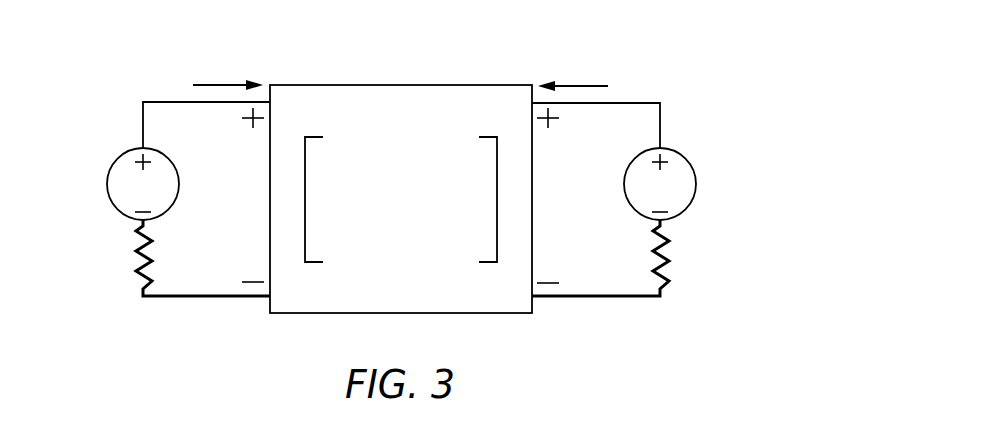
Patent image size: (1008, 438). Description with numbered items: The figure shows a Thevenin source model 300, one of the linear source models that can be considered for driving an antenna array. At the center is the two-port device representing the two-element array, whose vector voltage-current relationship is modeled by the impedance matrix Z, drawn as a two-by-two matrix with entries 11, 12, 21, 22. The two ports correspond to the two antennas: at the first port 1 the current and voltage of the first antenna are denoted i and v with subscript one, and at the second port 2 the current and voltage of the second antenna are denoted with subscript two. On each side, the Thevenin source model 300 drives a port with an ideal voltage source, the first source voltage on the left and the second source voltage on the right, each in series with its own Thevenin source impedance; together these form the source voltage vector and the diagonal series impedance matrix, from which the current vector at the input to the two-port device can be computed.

The Thevenin source model 300 is at (401, 163).
The impedance parameter Z11 11 is at (338, 156).
The impedance parameter Z12 12 is at (465, 156).
The impedance parameter Z21 21 is at (338, 241).
The impedance parameter Z22 22 is at (465, 241).
The port 1 (voltage v1, current i1) 1 is at (228, 165).
The port 2 (voltage v2, current i2) 2 is at (572, 166).